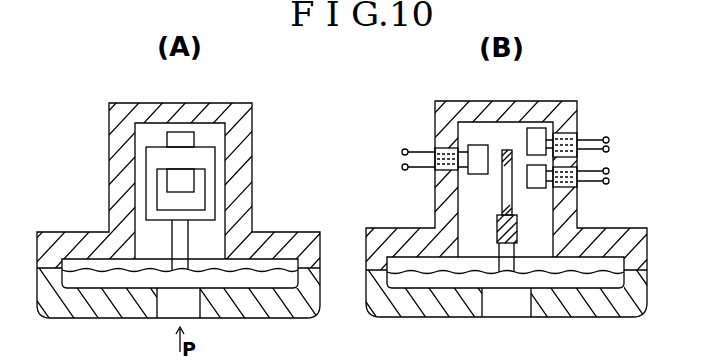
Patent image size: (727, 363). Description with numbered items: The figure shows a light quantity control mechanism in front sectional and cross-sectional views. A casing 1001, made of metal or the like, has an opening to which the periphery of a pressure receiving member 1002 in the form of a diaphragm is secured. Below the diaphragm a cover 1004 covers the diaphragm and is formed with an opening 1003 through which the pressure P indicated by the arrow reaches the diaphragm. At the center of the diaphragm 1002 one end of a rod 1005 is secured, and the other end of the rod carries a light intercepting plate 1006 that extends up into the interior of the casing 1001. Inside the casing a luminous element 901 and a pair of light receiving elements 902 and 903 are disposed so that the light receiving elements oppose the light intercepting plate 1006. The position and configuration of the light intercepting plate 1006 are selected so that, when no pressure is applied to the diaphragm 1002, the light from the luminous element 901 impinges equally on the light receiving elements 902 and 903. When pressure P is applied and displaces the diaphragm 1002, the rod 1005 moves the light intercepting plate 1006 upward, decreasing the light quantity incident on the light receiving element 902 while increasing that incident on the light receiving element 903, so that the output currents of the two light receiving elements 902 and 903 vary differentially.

In FIG. 10B, the luminous element 901 is at (478, 148).
In FIG. 10A, the light receiving element 902 is at (178, 131).
In FIG. 10B, the light receiving element 902 is at (537, 128).
In FIG. 10A, the light receiving element 903 is at (196, 182).
In FIG. 10B, the light receiving element 903 is at (535, 188).
In FIG. 10A, the casing 1001 is at (251, 110).
In FIG. 10A, the pressure receiving member 1002 is at (267, 274).
In FIG. 10A, the pressure inlet port 1003 is at (165, 318).
In FIG. 10A, the cover 1004 is at (312, 316).
In FIG. 10A, the rod 1005 is at (188, 245).
In FIG. 10B, the rod 1005 is at (517, 248).
In FIG. 10A, the light intercepting plate 1006 is at (215, 160).
In FIG. 10B, the light intercepting plate 1006 is at (506, 150).